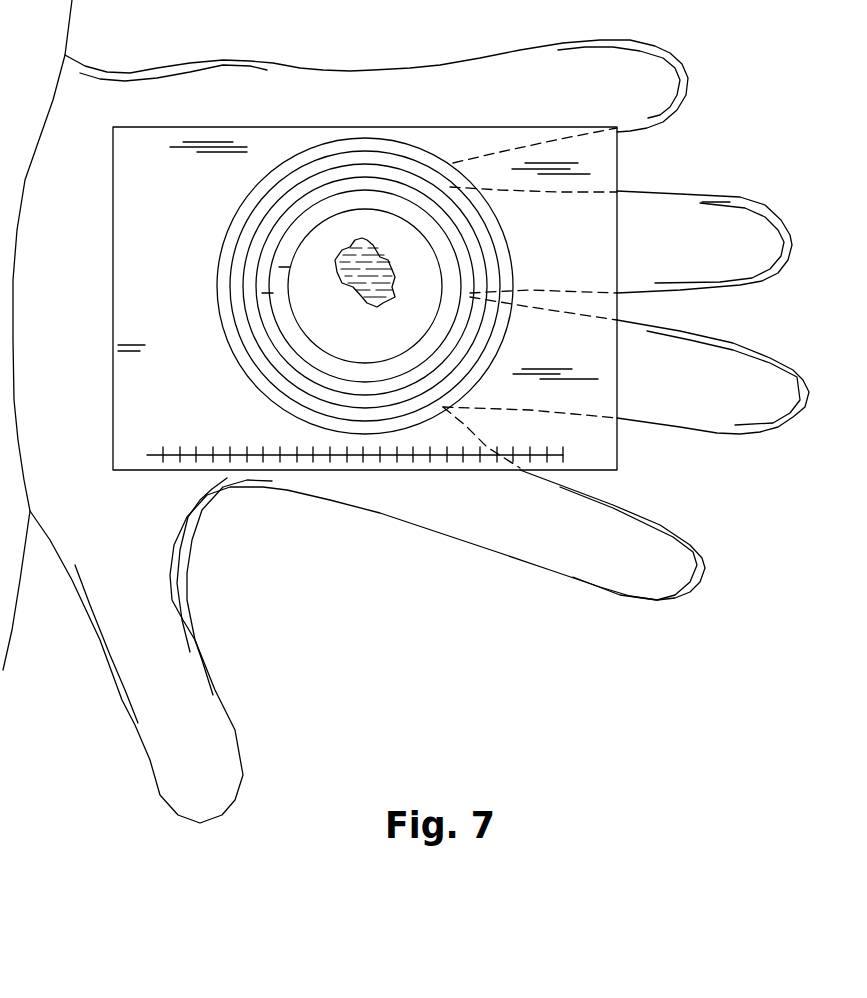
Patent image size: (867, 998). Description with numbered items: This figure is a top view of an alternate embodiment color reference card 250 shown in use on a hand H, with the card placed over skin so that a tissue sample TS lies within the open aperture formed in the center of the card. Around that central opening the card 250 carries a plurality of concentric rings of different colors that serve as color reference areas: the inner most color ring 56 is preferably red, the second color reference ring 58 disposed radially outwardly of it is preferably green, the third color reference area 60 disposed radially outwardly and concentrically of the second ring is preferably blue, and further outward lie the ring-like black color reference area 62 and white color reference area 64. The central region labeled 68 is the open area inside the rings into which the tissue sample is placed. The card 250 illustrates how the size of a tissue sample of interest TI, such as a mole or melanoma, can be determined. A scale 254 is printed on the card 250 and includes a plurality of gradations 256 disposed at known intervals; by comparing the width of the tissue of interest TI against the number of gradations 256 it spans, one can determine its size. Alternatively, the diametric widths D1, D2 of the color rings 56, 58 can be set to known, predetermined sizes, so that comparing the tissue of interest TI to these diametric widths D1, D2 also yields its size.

The reference card 250 is at (421, 235).
The white color reference area 64 is at (365, 228).
The black color reference area 62 is at (365, 215).
The third color reference area 60 is at (318, 286).
The second color reference ring 58 is at (314, 286).
The inner most color ring 56 is at (313, 310).
The central electrode 68 is at (365, 169).
The tissue sample of interest TI is at (299, 235).
The tissue sample TS is at (385, 351).
The diametric width D1 is at (233, 233).
The diametric width D2 is at (210, 267).
The gradations 256 is at (300, 427).
The scale 254 is at (327, 506).
The hand H is at (406, 411).